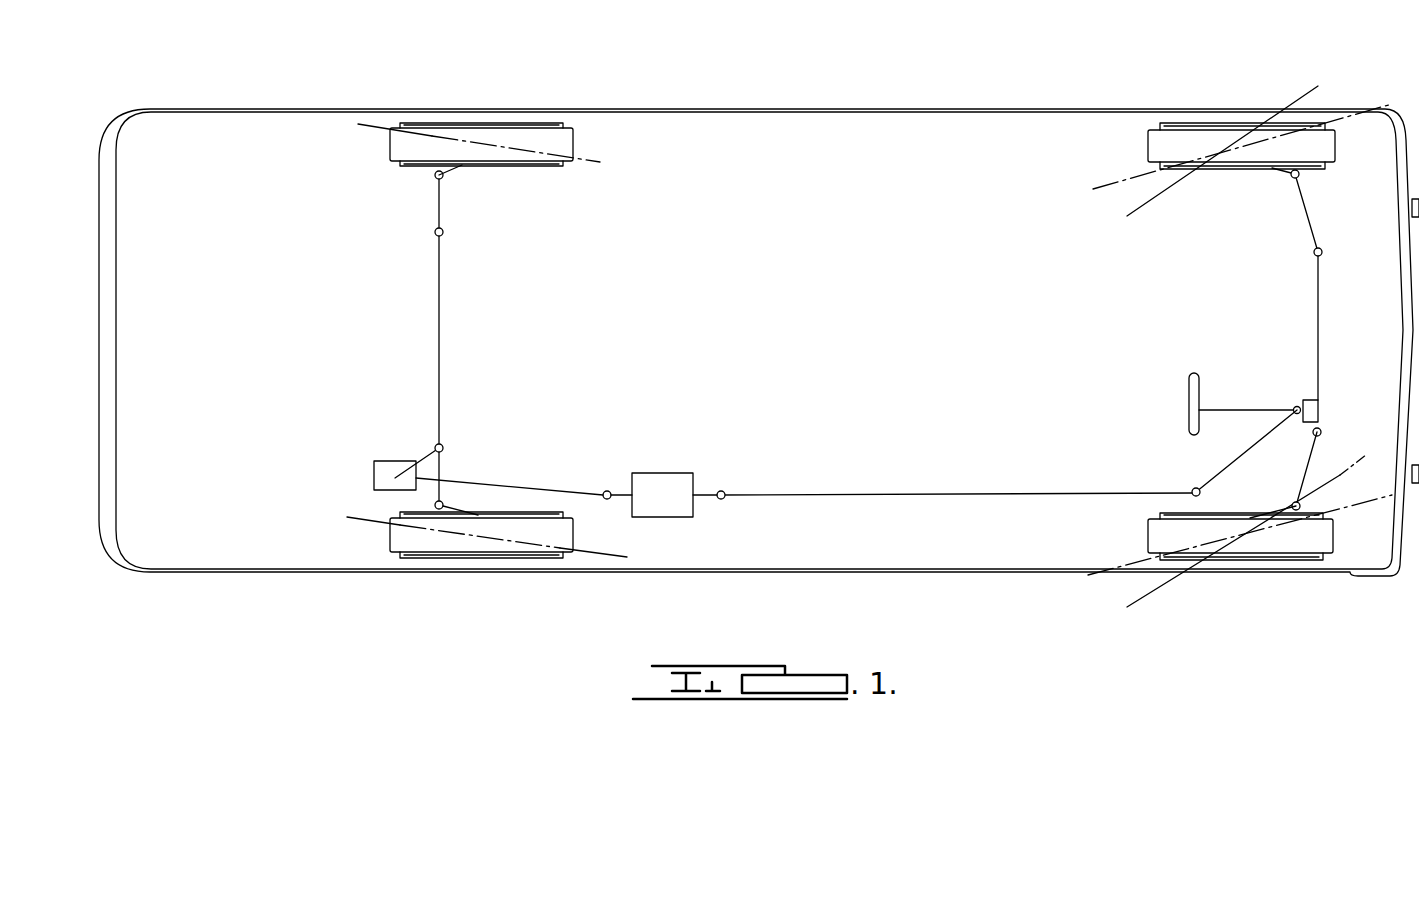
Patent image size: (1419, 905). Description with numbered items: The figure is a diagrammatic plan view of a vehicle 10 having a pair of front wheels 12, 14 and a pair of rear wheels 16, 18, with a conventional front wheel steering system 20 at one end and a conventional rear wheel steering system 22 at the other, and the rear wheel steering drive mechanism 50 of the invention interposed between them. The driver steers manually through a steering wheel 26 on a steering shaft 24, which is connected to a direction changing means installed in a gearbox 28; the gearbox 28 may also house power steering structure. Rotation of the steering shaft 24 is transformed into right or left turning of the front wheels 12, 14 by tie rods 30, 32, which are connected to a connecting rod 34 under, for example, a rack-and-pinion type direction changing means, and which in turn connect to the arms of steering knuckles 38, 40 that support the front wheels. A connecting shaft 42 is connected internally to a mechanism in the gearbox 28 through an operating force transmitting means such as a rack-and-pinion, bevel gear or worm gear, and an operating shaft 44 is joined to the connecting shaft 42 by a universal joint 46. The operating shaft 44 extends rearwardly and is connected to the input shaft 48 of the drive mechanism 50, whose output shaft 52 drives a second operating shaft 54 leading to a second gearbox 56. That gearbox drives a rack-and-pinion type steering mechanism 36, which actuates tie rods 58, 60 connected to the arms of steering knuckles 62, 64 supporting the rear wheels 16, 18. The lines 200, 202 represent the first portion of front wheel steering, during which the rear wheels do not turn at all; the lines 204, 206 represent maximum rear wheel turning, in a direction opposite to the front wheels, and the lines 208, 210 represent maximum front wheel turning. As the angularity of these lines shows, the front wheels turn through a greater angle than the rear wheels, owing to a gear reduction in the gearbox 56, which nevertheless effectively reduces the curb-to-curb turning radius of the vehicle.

The vehicle 10 is at (1043, 78).
The front wheel 12 is at (1215, 122).
The front wheel 14 is at (1278, 560).
The rear wheel 16 is at (513, 122).
The rear wheel 18 is at (462, 560).
The front wheel steering system 20 is at (1290, 298).
The rear wheel steering system 22 is at (495, 380).
The steering shaft 24 is at (1247, 407).
The steering wheel 26 is at (1189, 385).
The gearbox 28 is at (1320, 408).
The tie rod 30 is at (1307, 202).
The tie rod 32 is at (1322, 445).
The connecting rod 34 is at (1322, 337).
The steering mechanism 36 is at (439, 316).
The steering knuckle 38 is at (1272, 170).
The steering knuckle 40 is at (1257, 510).
The connecting shaft 42 is at (1230, 463).
The operating shaft 44 is at (826, 493).
The universal joint 46 is at (1190, 490).
The input shaft 48 is at (708, 492).
The rear wheel steering drive mechanism 50 is at (669, 468).
The output shaft 52 is at (625, 452).
The second operating shaft 54 is at (520, 487).
The second gearbox 56 is at (374, 473).
The tie rod 58 is at (439, 205).
The tie rod 60 is at (442, 463).
The steering knuckle 62 is at (455, 177).
The steering knuckle 64 is at (458, 512).
The line 200 is at (1125, 175).
The line 202 is at (1125, 570).
The line 204 is at (600, 158).
The line 206 is at (615, 565).
The line 208 is at (1316, 90).
The line 210 is at (1145, 602).